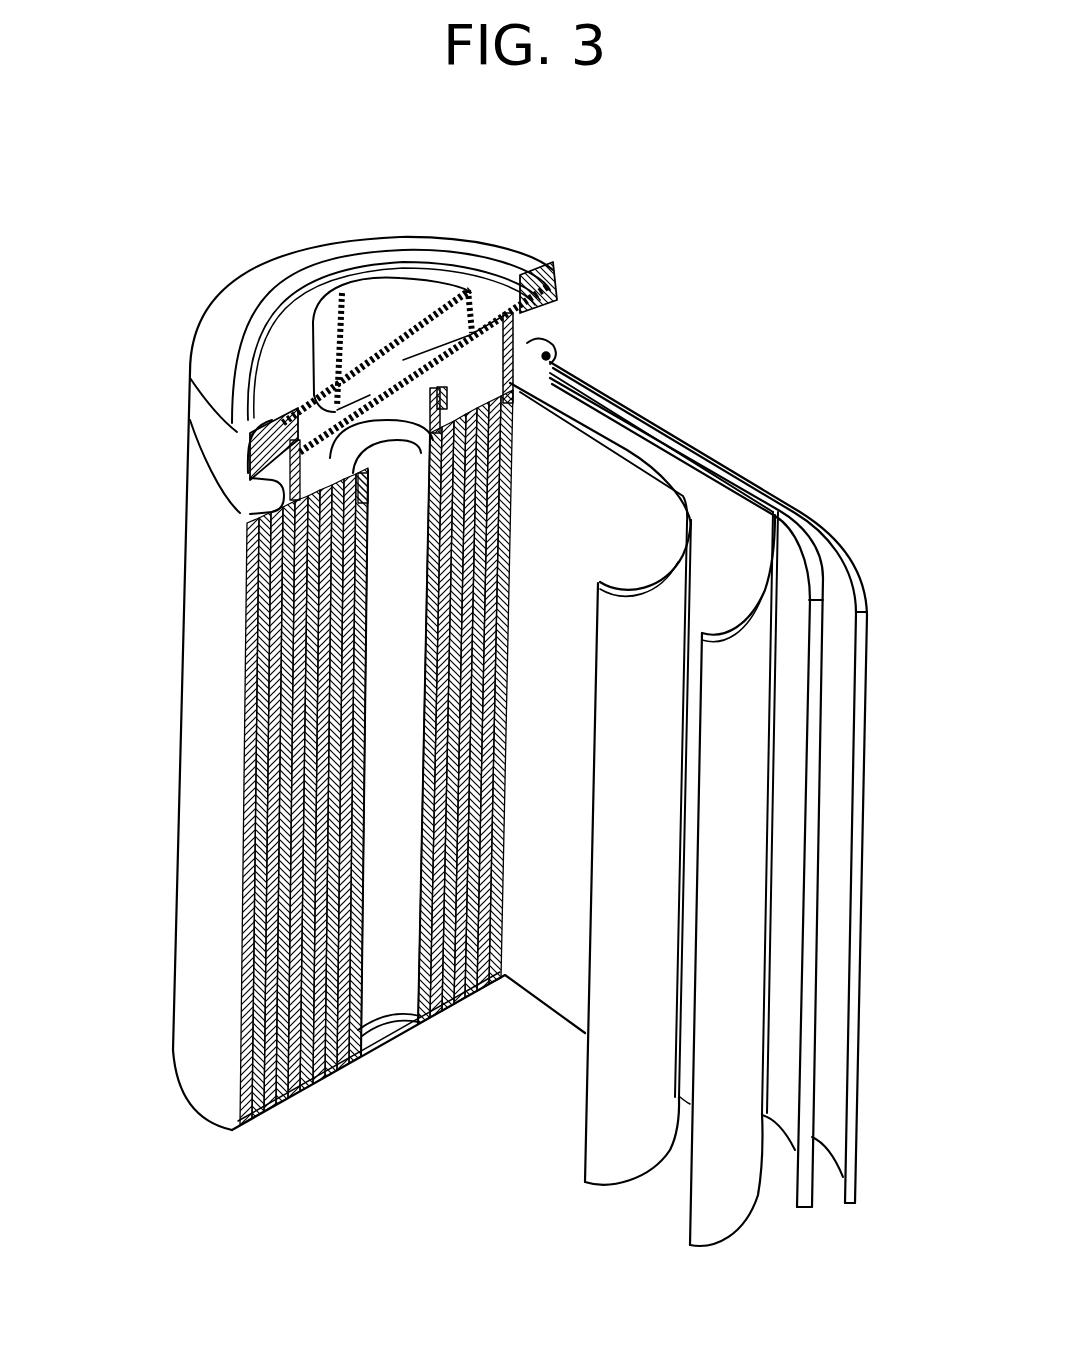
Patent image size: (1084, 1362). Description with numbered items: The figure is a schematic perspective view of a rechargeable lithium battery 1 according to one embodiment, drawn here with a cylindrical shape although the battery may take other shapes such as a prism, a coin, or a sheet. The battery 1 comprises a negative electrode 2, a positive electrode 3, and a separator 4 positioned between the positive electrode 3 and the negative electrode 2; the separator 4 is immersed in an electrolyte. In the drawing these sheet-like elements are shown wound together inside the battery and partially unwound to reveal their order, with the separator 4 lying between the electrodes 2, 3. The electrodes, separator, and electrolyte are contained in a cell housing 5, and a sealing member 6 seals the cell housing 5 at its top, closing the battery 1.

The rechargeable lithium battery 1 is at (402, 149).
The negative electrode 2 is at (863, 720).
The positive electrode 3 is at (743, 628).
The separator 4 is at (632, 1170).
The cell housing 5 is at (217, 932).
The sealing member 6 is at (350, 298).